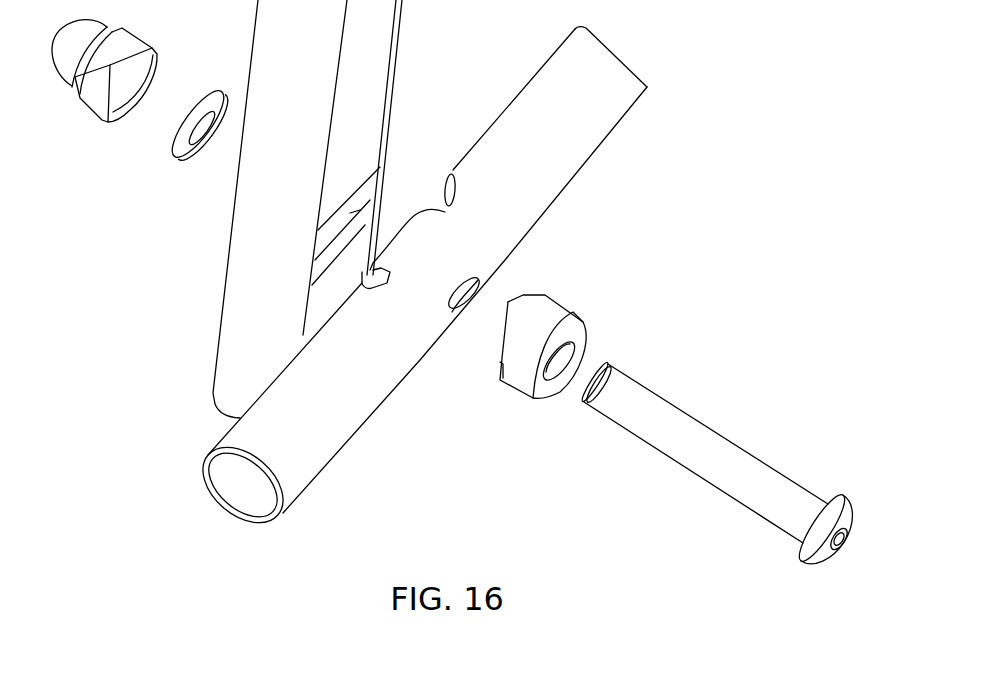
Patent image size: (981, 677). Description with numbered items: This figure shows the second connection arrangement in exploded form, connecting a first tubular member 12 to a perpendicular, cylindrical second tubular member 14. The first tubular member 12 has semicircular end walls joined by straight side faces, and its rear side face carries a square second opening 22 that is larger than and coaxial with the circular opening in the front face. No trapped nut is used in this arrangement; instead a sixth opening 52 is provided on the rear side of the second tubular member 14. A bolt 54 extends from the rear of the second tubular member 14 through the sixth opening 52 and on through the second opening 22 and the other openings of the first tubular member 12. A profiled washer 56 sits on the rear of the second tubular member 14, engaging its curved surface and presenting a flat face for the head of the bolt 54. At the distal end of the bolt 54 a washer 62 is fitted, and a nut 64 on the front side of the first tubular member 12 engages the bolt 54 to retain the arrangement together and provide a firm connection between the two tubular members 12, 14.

The first tubular member 12 is at (242, 336).
The second tubular member 14 is at (302, 433).
The second opening 22 is at (383, 185).
The sixth opening 52 is at (470, 295).
The bolt 54 is at (707, 458).
The profiled washer 56 is at (545, 322).
The washer 62 is at (182, 168).
The nut 64 is at (93, 107).